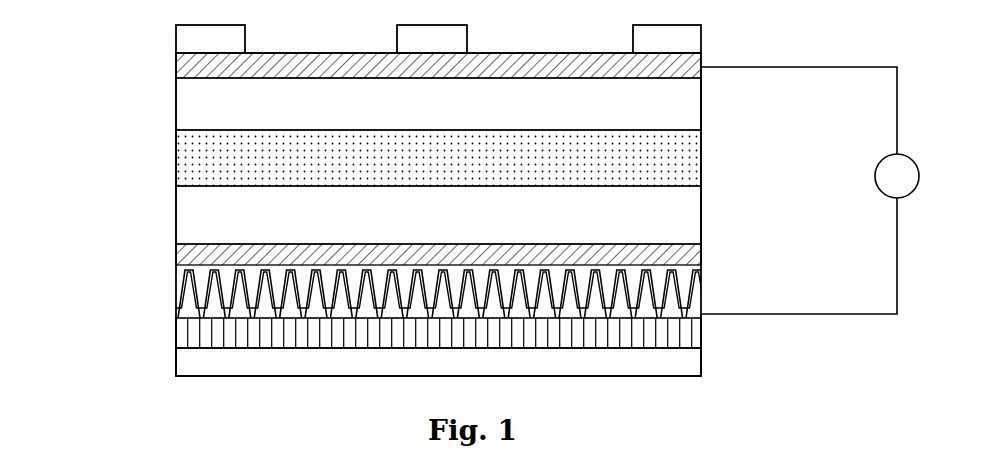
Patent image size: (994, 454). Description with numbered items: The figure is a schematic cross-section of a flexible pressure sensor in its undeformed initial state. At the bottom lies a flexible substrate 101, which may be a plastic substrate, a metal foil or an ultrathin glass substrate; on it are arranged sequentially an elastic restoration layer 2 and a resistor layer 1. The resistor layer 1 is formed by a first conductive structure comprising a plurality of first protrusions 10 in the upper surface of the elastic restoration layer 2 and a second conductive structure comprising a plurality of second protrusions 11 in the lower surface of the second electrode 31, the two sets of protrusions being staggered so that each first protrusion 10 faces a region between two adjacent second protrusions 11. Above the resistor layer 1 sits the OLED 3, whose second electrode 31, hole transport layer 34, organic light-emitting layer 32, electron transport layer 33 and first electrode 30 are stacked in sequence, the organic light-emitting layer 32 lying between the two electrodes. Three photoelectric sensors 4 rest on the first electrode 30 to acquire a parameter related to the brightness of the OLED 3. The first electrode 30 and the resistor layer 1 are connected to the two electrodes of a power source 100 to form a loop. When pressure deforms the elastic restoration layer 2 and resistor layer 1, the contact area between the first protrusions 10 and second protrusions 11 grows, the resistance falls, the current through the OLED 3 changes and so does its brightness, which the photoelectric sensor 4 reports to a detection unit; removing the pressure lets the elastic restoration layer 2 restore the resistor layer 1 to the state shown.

The resistor layer 1 is at (437, 291).
The elastic restoration layer 2 is at (207, 335).
The OLED 3 is at (364, 160).
The photoelectric sensor 4 is at (215, 40).
The first protrusions 10 is at (670, 299).
The second protrusions 11 is at (682, 276).
The first electrode 30 is at (215, 65).
The second electrode 31 is at (397, 255).
The organic light-emitting layer 32 is at (215, 158).
The electron transport layer 33 is at (215, 105).
The hole transport layer 34 is at (215, 213).
The power source 100 is at (897, 179).
The flexible substrate 101 is at (207, 364).